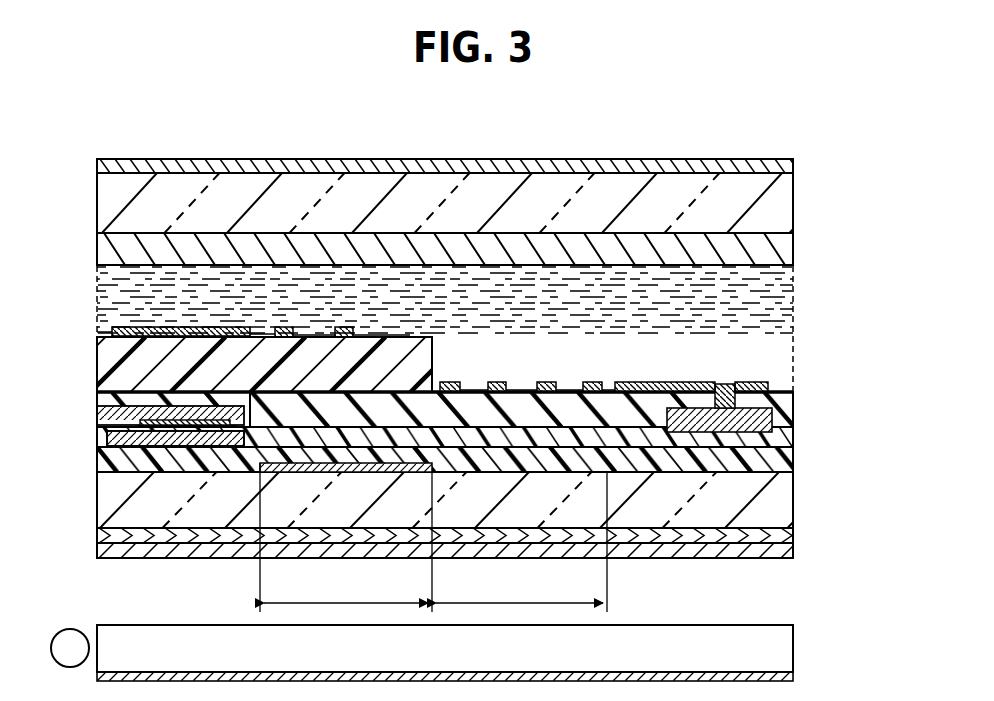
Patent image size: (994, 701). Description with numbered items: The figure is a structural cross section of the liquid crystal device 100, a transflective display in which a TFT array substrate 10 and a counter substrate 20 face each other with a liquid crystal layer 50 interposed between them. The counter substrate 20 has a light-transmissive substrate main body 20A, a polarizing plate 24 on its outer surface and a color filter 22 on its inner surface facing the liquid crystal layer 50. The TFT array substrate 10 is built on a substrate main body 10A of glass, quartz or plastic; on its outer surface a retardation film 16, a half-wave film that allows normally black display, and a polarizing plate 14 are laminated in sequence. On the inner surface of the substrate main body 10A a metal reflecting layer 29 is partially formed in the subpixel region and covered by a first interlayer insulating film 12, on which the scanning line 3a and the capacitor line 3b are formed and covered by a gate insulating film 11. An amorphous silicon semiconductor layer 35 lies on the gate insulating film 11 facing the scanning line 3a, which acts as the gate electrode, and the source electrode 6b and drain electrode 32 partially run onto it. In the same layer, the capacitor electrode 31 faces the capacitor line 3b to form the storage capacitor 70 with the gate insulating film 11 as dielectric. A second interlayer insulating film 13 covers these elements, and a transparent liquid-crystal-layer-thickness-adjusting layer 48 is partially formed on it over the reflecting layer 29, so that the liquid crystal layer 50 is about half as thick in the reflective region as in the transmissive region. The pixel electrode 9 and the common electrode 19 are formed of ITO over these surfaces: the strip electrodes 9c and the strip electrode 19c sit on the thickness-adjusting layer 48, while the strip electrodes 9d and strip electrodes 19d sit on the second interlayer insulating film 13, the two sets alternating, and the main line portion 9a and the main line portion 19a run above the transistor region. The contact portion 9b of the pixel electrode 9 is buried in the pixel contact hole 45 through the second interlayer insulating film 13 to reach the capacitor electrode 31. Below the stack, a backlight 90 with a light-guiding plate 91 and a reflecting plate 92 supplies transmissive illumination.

The liquid crystal device 100 is at (700, 149).
The counter substrate 20 is at (92, 158).
The polarizing plate 24 is at (793, 165).
The substrate main body 20A is at (785, 207).
The color filter 22 is at (785, 247).
The liquid crystal layer 50 is at (793, 312).
The TFT array substrate 10 is at (92, 337).
The polarizing plate 14 is at (793, 551).
The retardation film 16 is at (785, 536).
The substrate main body 10A is at (785, 500).
The first interlayer insulating film 12 is at (785, 458).
The gate insulating film 11 is at (785, 434).
The second interlayer insulating film 13 is at (785, 398).
The reflecting layer 29 is at (300, 470).
The drain electrode 32 is at (228, 416).
The scanning line 3a is at (178, 424).
The semiconductor layer 35 is at (150, 440).
The source electrode 6b is at (105, 432).
The capacitor electrode 31 is at (702, 420).
The capacitor line 3b is at (752, 432).
The pixel electrode 9 is at (762, 378).
The storage capacitor 70 is at (662, 412).
The contact portion 9b is at (716, 386).
The pixel contact hole 45 is at (740, 382).
The main line portion 9a is at (628, 382).
The strip electrodes 9d is at (542, 382).
The strip electrodes 19d is at (592, 382).
The strip electrodes 9c is at (418, 327).
The strip electrode 19c is at (344, 334).
The liquid-crystal-layer-thickness-adjusting layer 48 is at (170, 327).
The main line portion 19a is at (228, 334).
The common electrode 19 is at (120, 325).
The backlight 90 is at (858, 633).
The light-guiding plate 91 is at (793, 650).
The reflecting plate 92 is at (793, 677).